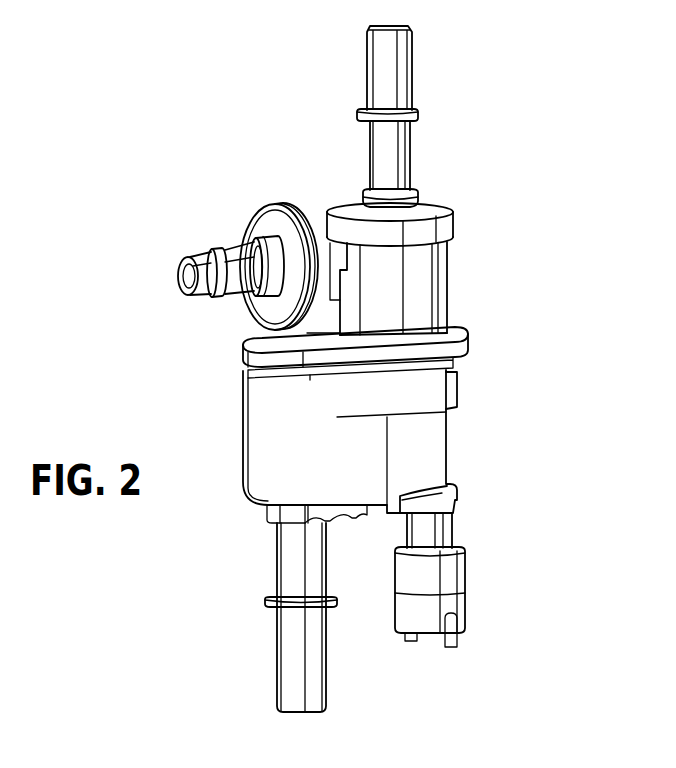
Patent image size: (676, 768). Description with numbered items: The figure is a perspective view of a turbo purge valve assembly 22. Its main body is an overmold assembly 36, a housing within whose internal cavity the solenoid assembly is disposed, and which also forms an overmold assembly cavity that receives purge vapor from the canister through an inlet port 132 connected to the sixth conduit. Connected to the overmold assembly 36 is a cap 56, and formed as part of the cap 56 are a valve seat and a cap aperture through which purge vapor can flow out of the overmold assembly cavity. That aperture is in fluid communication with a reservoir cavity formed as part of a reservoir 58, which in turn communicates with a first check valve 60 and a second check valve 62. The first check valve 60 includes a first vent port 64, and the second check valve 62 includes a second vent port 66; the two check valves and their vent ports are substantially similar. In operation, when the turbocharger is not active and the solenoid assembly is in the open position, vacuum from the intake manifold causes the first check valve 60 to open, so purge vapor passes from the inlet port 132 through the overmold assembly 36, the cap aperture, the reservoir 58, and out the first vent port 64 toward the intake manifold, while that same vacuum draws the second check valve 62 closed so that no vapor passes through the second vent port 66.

The turbo purge valve assembly 22 is at (526, 218).
The overmold assembly 36 is at (449, 443).
The cap 56 is at (462, 343).
The reservoir 58 is at (449, 268).
The first check valve 60 is at (292, 186).
The second check valve 62 is at (457, 195).
The first vent port 64 is at (205, 252).
The second vent port 66 is at (412, 152).
The inlet port 132 is at (277, 658).